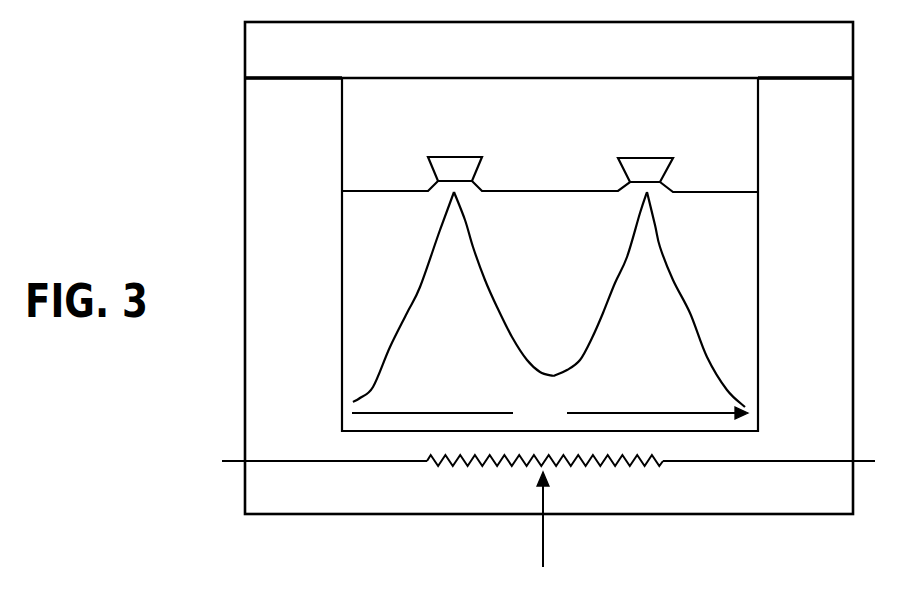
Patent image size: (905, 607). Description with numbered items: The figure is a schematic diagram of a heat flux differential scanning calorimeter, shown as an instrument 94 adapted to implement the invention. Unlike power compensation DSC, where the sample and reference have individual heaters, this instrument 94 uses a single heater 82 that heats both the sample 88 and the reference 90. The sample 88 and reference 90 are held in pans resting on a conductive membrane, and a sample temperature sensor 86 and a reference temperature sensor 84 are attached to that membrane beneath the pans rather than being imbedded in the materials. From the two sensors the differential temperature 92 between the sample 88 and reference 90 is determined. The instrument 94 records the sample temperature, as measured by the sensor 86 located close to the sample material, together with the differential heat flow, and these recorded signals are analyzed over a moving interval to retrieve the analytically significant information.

The heat flux DSC instrument 94 is at (245, 136).
The sample 88 is at (432, 156).
The reference 90 is at (622, 157).
The sample temperature sensor 86 is at (430, 268).
The reference temperature sensor 84 is at (673, 278).
The differential temperature 92 is at (615, 413).
The heater 82 is at (543, 543).